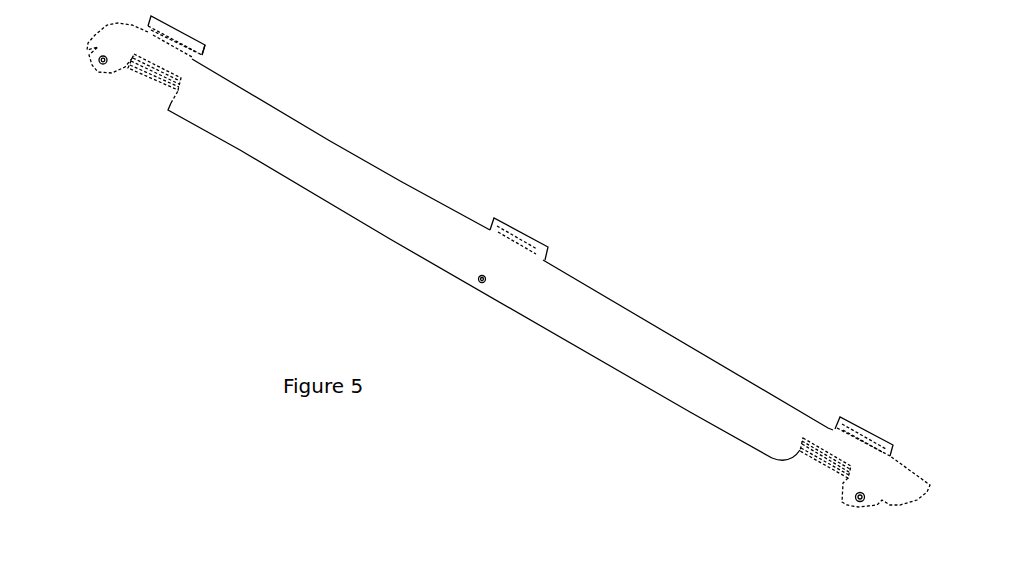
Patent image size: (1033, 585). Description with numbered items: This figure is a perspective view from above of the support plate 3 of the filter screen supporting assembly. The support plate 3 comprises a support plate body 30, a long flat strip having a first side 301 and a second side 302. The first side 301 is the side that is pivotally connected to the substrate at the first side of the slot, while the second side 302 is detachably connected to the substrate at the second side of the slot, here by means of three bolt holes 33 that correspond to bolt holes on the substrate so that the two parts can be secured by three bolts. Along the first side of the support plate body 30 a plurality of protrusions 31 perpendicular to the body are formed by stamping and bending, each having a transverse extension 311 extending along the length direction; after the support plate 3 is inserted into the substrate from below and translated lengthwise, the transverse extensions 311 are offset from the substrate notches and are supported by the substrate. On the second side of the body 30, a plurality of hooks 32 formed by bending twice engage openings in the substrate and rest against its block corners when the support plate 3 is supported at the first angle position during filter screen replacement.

The support plate 3 is at (498, 254).
The support plate body 30 is at (498, 254).
The first side 301 is at (255, 95).
The second side 302 is at (244, 153).
The protrusions 31 is at (178, 28).
The transverse extensions 311 is at (207, 47).
The hooks 32 is at (168, 74).
The bolt holes 33 is at (97, 62).